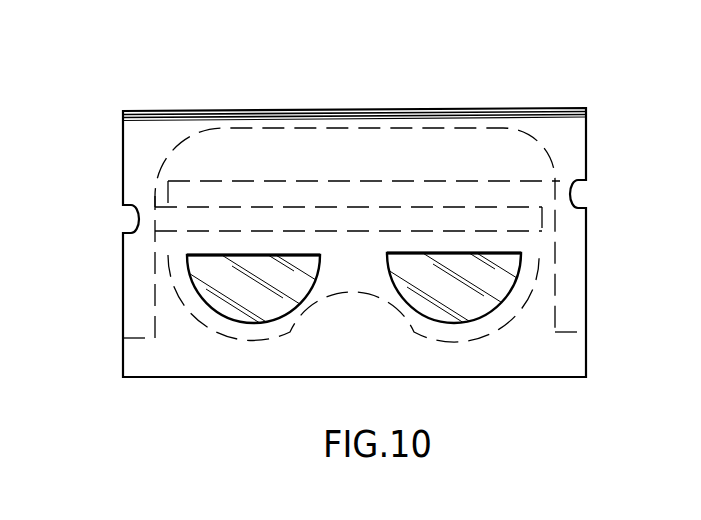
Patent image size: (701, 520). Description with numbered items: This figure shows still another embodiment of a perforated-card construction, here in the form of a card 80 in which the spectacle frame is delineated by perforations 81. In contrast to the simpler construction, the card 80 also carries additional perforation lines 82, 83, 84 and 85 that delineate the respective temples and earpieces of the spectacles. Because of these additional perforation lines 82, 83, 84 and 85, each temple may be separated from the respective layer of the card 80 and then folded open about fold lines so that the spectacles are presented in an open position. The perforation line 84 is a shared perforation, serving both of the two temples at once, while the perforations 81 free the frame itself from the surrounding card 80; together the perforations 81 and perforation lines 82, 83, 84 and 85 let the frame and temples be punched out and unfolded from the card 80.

The card 80 is at (108, 330).
The perforations 81 is at (275, 334).
The perforation line 82 is at (555, 305).
The perforation line 83 is at (495, 180).
The perforation line 84 is at (452, 205).
The perforation line 85 is at (220, 235).